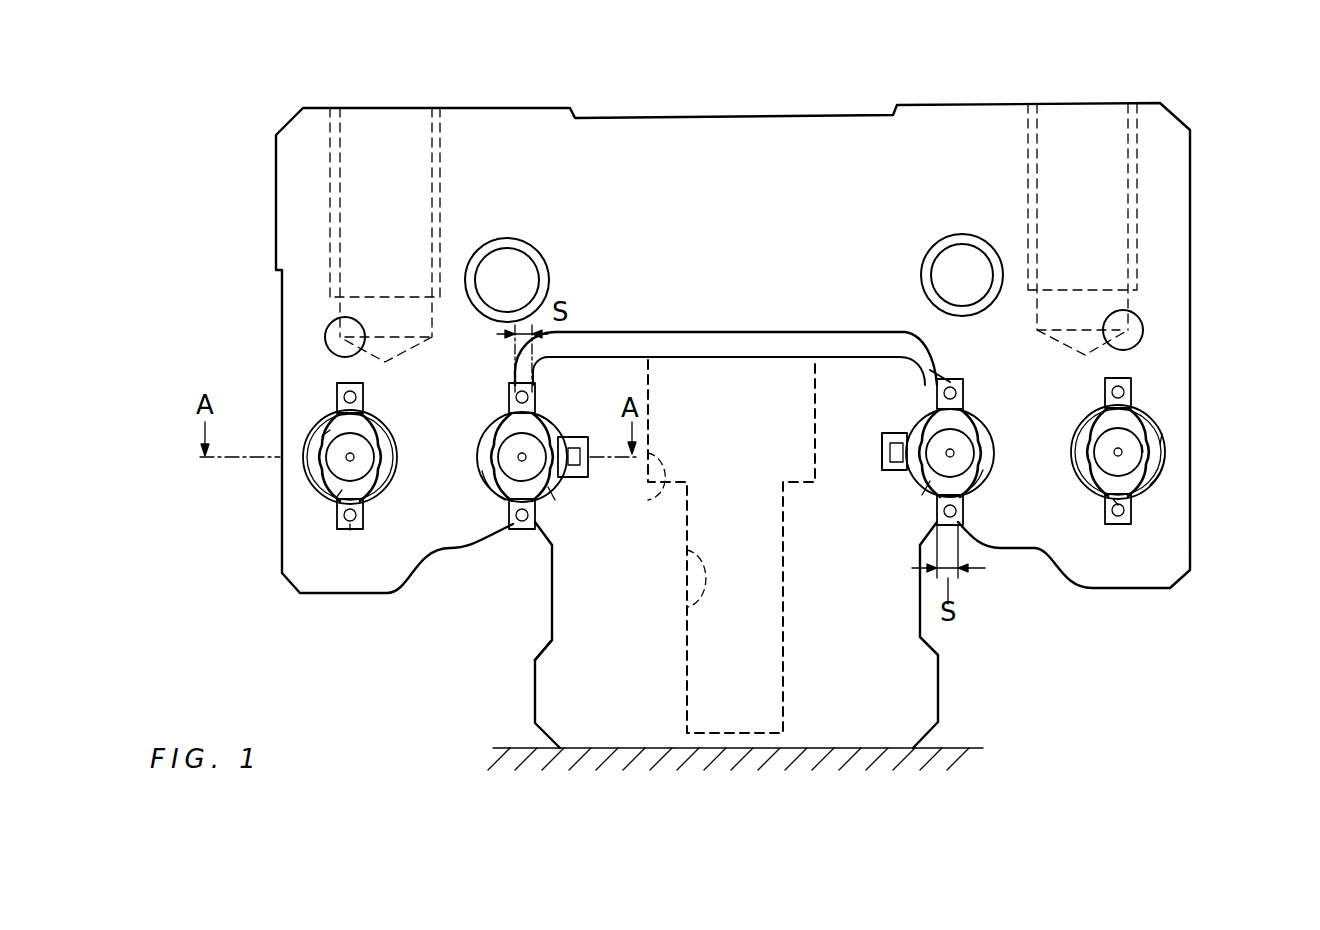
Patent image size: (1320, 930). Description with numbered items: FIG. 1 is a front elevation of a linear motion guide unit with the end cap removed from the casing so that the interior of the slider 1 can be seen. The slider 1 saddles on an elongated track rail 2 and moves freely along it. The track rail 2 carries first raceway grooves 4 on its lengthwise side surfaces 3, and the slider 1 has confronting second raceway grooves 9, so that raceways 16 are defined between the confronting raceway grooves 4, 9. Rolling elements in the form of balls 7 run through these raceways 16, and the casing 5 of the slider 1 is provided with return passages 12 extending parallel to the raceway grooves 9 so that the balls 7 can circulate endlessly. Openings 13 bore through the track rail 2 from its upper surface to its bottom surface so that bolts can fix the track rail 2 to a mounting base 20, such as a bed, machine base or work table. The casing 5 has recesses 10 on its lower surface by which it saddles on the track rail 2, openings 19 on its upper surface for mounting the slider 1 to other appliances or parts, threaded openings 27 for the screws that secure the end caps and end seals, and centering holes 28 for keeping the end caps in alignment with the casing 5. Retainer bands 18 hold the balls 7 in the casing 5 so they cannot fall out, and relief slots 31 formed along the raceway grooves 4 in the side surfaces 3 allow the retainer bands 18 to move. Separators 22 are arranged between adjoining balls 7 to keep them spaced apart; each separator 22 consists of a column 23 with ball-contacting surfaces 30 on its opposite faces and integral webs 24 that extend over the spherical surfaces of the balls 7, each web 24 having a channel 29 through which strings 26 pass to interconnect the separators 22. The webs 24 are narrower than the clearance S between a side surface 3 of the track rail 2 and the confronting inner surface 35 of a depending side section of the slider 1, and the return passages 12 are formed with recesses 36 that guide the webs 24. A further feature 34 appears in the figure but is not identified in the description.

The slider 1 is at (666, 106).
The track rail 2 is at (830, 680).
The lengthwise side surfaces 3 is at (535, 665).
The first raceway grooves 4 is at (548, 487).
The casing 5 is at (728, 190).
The balls 7 is at (384, 472).
The second raceway grooves 9 is at (482, 471).
The recesses 10 is at (552, 345).
The return passages 12 is at (320, 479).
The openings 13 is at (690, 552).
The raceways 16 is at (555, 423).
The retainer bands 18 is at (583, 476).
The openings 19 is at (335, 180).
The mounting base 20 is at (752, 812).
The separators 22 is at (318, 434).
The column 23 is at (336, 498).
The webs 24 is at (350, 530).
The strings 26 is at (358, 389).
The threaded openings 27 is at (510, 262).
The centering holes 28 is at (336, 336).
The channel 29 is at (336, 518).
The ball-contacting surfaces 30 is at (372, 446).
The relief slots 31 is at (893, 433).
The spring tongue 34 is at (1172, 470).
The inner surface 35 is at (952, 372).
The recesses 36 is at (338, 384).